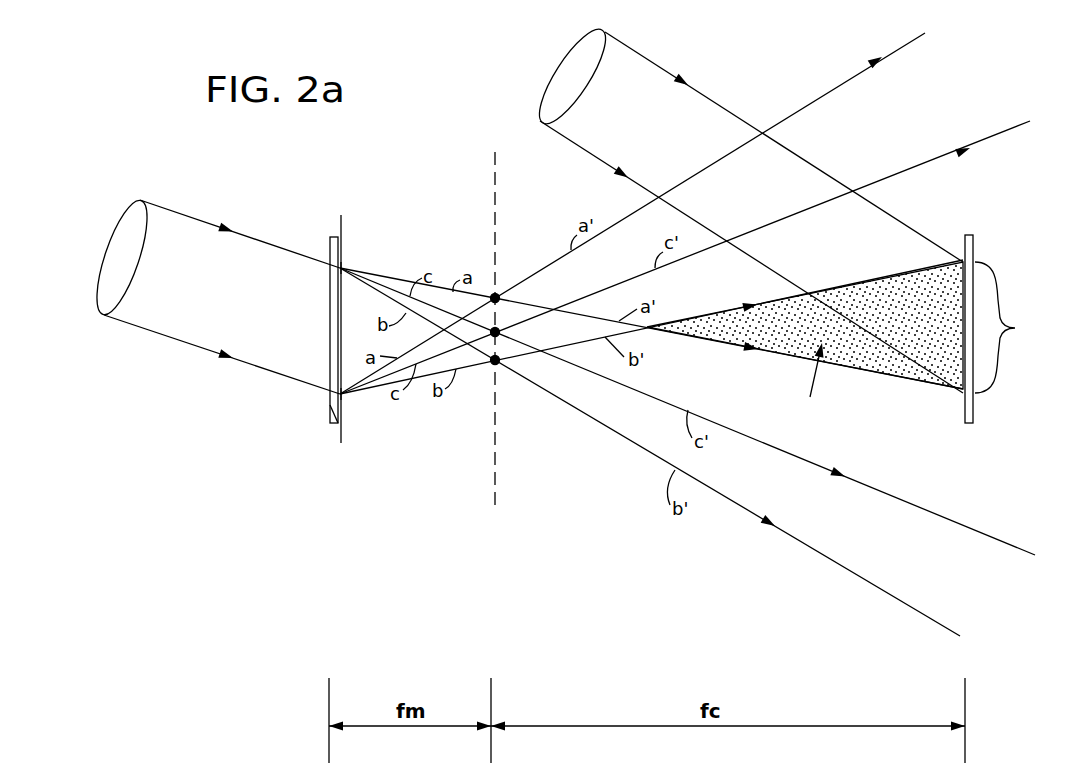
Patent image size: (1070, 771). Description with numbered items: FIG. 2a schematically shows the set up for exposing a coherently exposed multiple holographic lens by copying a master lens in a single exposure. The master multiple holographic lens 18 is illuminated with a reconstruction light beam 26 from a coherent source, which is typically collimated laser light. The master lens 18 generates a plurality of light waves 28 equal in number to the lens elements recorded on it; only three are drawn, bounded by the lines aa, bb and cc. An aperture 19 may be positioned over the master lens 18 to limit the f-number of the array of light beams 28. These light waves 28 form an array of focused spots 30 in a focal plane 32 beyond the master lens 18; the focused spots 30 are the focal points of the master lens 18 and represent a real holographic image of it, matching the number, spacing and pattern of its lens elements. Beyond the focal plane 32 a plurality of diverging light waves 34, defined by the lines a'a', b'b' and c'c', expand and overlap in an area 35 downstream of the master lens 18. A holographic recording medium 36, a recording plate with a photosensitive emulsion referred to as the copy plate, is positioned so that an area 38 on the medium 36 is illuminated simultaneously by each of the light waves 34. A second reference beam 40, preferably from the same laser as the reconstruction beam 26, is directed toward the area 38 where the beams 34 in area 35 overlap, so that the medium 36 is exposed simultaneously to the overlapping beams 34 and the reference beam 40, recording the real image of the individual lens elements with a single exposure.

The master multiple holographic lens 18 is at (332, 242).
The aperture 19 is at (339, 418).
The reconstruction light beam 26 is at (150, 336).
The plurality of light waves 28 is at (369, 262).
The array of focused spots 30 is at (503, 274).
The focal plane 32 is at (496, 182).
The plurality of diverging light waves 34 is at (606, 458).
The overlap area 35 is at (857, 362).
The holographic recording medium 36 is at (973, 246).
The illuminated area 38 is at (1011, 327).
The second reference beam 40 is at (700, 88).